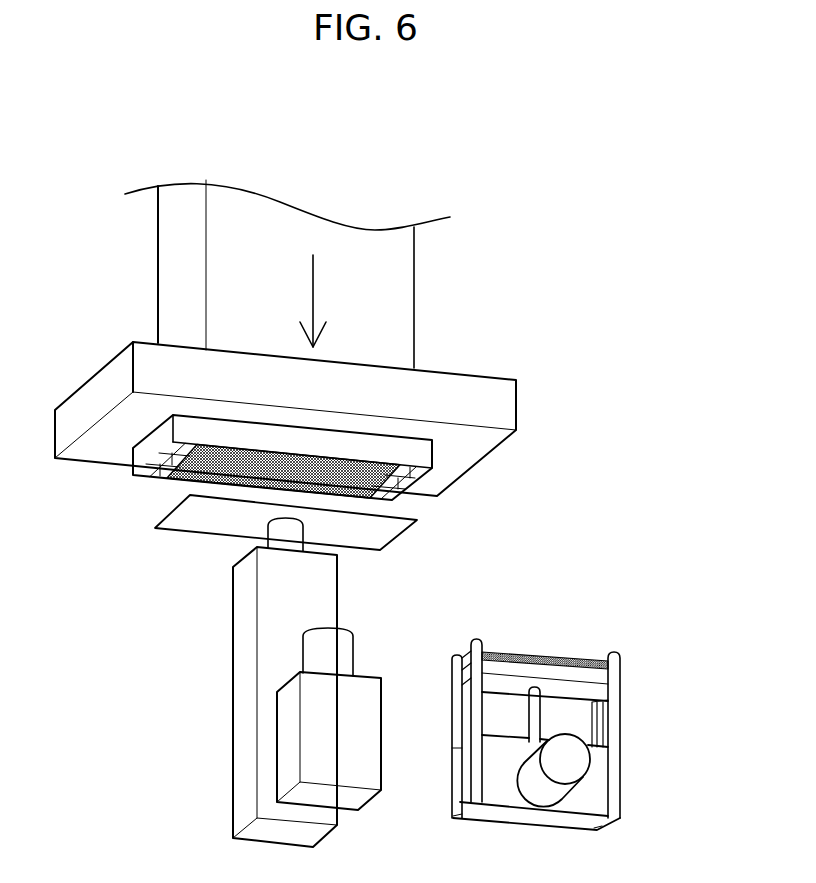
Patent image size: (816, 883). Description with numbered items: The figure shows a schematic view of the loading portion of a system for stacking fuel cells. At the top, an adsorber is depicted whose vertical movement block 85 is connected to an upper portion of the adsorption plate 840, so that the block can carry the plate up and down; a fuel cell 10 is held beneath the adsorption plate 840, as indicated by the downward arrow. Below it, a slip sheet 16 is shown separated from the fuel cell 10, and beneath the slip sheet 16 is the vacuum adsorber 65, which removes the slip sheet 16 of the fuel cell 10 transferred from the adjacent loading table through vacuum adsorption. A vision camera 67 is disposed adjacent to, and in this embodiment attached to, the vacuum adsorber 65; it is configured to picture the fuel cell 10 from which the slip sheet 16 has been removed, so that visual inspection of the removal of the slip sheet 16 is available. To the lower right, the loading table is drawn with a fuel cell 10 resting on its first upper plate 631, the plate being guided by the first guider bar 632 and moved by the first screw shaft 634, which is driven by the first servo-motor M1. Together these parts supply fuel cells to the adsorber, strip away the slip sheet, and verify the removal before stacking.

The vertical movement block 85 is at (395, 288).
The adsorption plate 840 is at (500, 403).
The fuel cell 10 is at (188, 476).
The slip sheet 16 is at (388, 530).
The vacuum adsorber 65 is at (247, 637).
The vision camera 67 is at (290, 728).
The first guider bar 632 is at (615, 660).
The first upper plate 631 is at (602, 677).
The first screw shaft 634 is at (537, 713).
The first servo-motor M1 is at (575, 763).